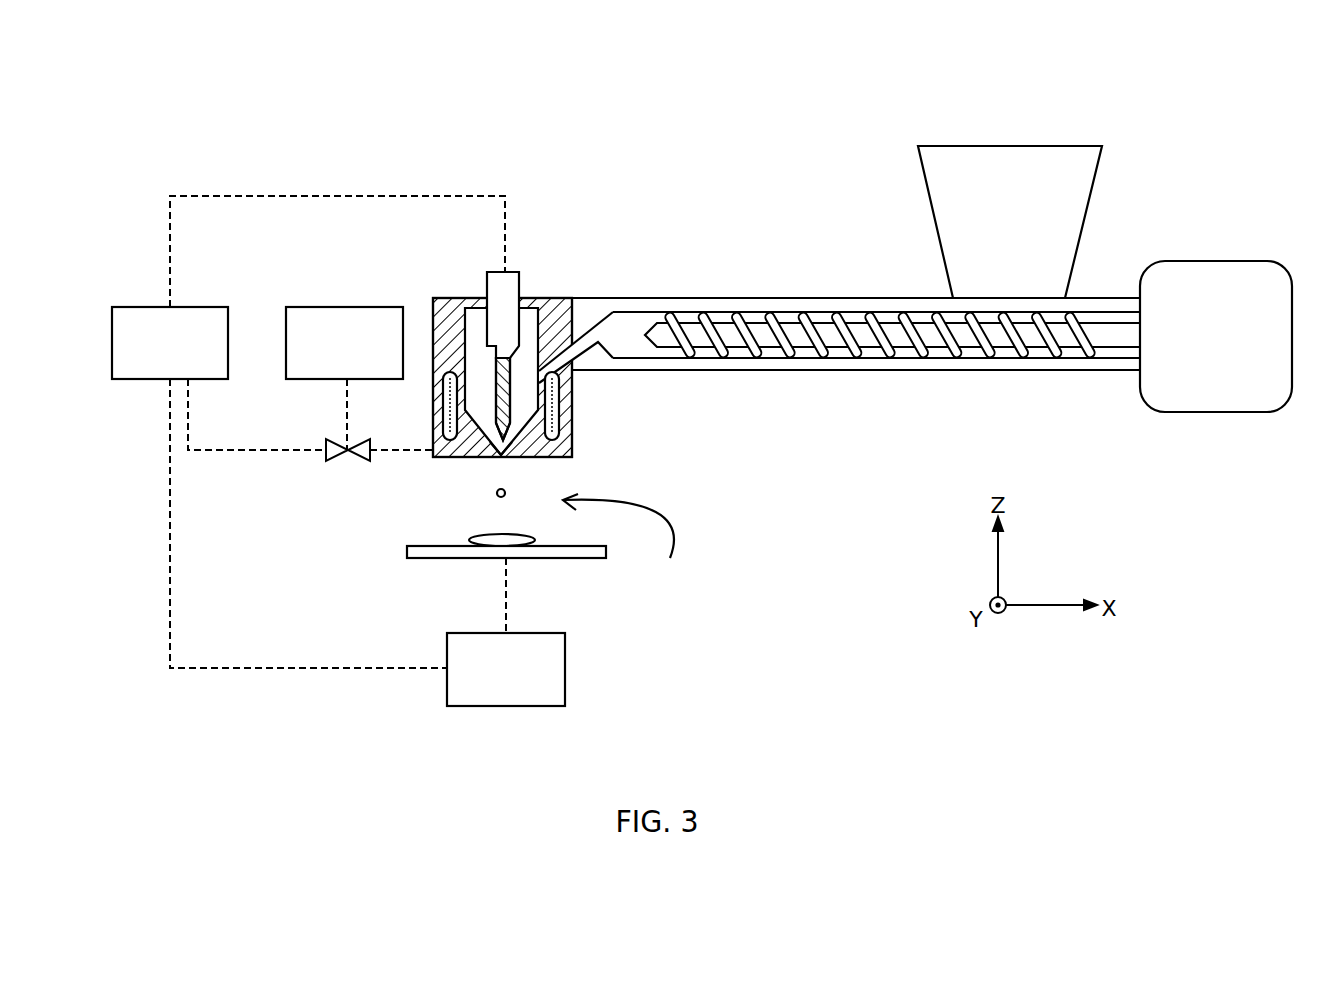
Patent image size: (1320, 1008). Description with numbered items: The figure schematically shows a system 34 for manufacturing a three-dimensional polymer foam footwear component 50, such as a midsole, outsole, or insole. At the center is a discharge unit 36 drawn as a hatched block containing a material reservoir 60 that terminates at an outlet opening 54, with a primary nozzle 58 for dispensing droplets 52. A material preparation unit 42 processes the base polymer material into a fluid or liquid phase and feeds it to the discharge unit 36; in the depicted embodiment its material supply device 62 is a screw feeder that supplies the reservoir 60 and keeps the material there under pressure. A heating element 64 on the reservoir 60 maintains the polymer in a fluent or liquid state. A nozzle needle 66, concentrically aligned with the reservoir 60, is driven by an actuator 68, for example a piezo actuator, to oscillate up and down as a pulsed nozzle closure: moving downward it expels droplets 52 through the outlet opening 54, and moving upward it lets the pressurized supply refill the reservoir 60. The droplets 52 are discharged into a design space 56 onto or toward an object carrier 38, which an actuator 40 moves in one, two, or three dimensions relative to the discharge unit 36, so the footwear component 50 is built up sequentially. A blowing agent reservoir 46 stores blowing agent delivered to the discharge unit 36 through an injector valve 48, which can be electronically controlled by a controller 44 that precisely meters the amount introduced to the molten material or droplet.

The system 34 is at (213, 112).
The discharge unit 36 is at (423, 317).
The object carrier 38 is at (586, 574).
The actuator 40 is at (506, 669).
The material preparation unit 42 is at (886, 250).
The controller 44 is at (170, 343).
The blowing agent reservoir 46 is at (344, 343).
The injector valve 48 is at (345, 463).
The 3D polymer foam footwear component 50 is at (485, 538).
The droplets 52 is at (497, 493).
The outlet opening 54 is at (503, 455).
The design space 56 is at (628, 541).
The primary nozzle 58 is at (566, 453).
The material reservoir 60 is at (522, 412).
The material supply device 62 is at (735, 347).
The heating element 64 is at (559, 405).
The nozzle needle 66 is at (492, 417).
The actuator 68 is at (520, 288).